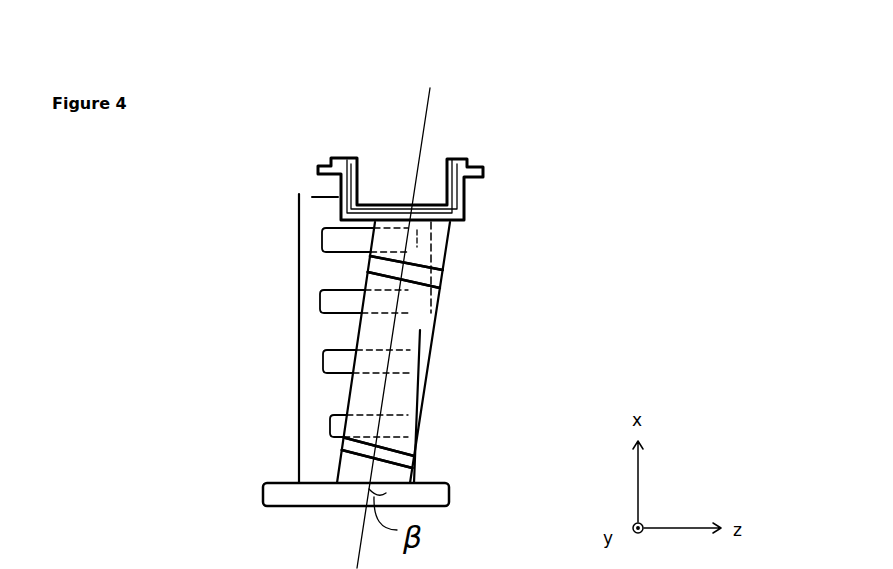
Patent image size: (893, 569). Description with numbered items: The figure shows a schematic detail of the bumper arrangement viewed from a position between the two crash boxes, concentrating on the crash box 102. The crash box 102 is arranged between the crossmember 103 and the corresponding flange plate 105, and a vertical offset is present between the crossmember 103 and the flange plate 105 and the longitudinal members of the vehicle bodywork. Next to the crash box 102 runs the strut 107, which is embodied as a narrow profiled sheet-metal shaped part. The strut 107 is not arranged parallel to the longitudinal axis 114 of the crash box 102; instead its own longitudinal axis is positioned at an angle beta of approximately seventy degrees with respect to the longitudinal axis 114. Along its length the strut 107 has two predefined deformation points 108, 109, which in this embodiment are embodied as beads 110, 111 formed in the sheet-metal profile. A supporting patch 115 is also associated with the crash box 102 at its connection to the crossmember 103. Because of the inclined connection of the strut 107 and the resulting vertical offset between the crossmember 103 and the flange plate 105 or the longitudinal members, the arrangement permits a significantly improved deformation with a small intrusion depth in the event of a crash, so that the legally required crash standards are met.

The crash box 102 is at (316, 339).
The crossmember 103 is at (463, 198).
The flange plate 105 is at (437, 493).
The strut 107 is at (428, 358).
The predefined deformation point 108 is at (420, 277).
The bead 110 is at (420, 277).
The predefined deformation point 109 is at (362, 440).
The bead 111 is at (362, 440).
The longitudinal axis 114 is at (430, 110).
The supporting patch 115 is at (462, 160).